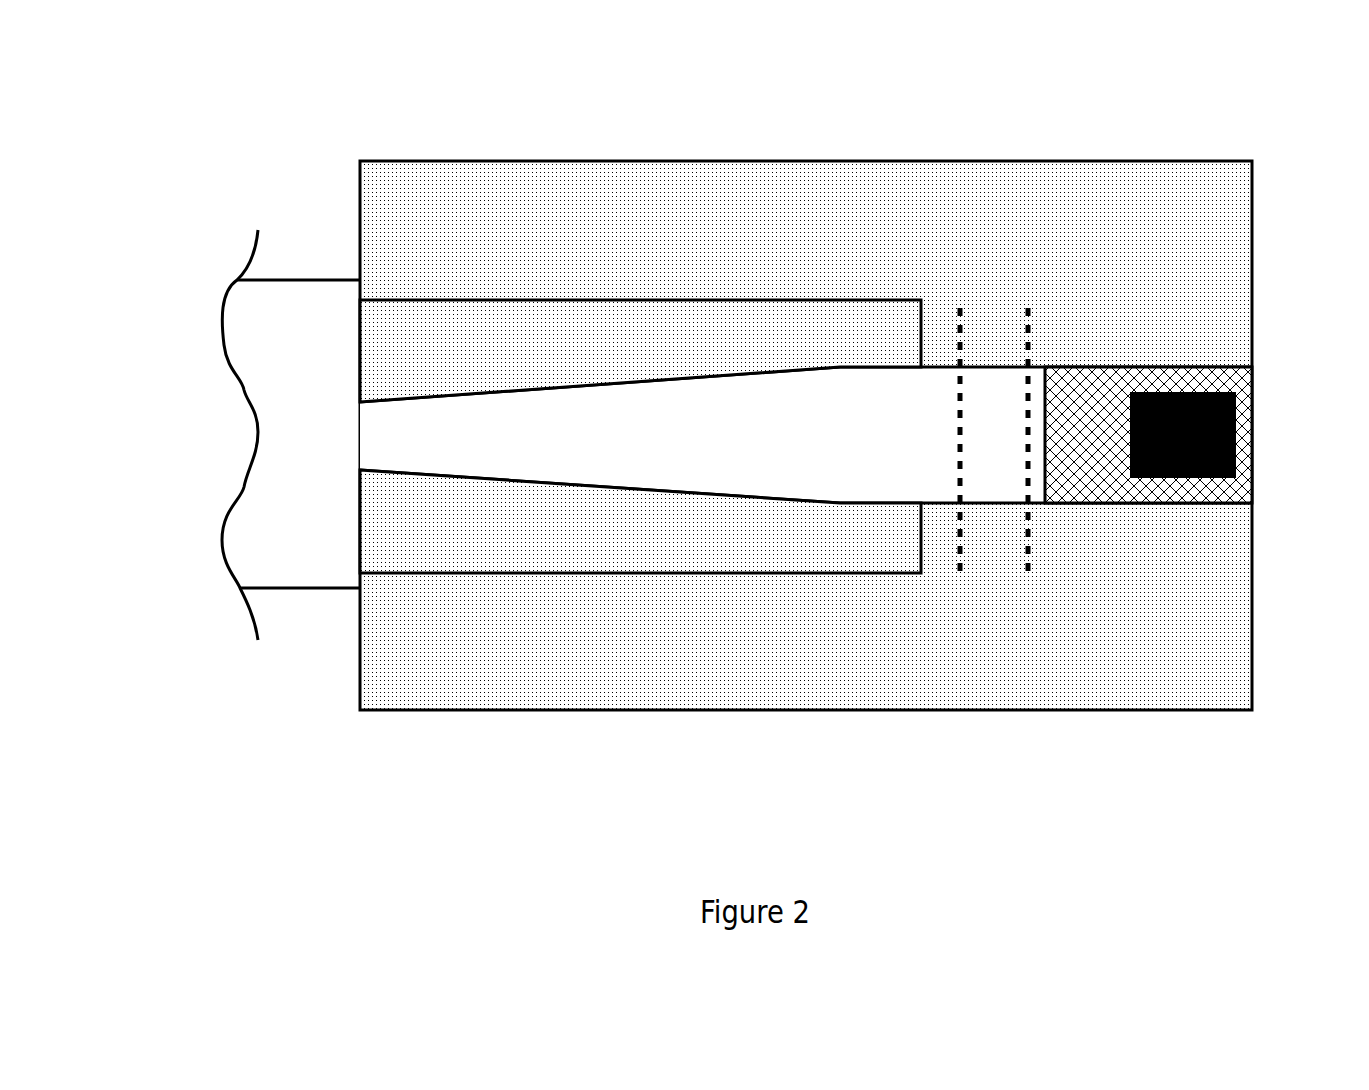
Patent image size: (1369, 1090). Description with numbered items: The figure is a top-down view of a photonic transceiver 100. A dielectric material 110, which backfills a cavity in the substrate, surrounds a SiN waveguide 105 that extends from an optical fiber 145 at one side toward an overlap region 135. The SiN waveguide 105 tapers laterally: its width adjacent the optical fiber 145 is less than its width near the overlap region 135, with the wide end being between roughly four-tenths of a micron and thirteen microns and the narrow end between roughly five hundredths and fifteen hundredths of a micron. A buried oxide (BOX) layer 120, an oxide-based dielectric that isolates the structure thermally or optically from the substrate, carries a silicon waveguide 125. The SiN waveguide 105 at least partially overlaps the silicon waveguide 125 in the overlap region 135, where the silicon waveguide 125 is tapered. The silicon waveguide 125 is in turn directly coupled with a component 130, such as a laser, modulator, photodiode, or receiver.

The transceiver 100 is at (770, 404).
The SiN waveguide 105 is at (728, 453).
The dielectric material 110 is at (502, 530).
The buried oxide (BOX) layer 120 is at (1097, 675).
The silicon waveguide 125 is at (1113, 485).
The component 130 is at (1236, 418).
The overlap region 135 is at (996, 268).
The optical fiber 145 is at (300, 299).